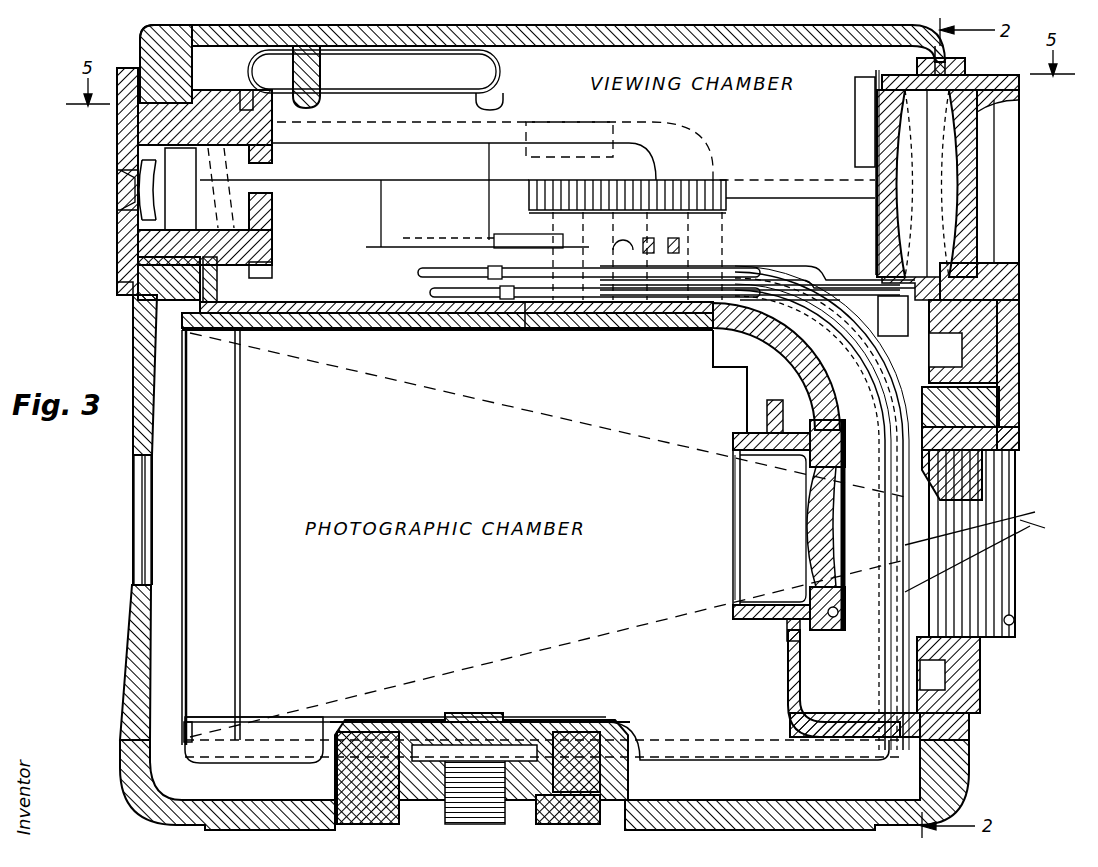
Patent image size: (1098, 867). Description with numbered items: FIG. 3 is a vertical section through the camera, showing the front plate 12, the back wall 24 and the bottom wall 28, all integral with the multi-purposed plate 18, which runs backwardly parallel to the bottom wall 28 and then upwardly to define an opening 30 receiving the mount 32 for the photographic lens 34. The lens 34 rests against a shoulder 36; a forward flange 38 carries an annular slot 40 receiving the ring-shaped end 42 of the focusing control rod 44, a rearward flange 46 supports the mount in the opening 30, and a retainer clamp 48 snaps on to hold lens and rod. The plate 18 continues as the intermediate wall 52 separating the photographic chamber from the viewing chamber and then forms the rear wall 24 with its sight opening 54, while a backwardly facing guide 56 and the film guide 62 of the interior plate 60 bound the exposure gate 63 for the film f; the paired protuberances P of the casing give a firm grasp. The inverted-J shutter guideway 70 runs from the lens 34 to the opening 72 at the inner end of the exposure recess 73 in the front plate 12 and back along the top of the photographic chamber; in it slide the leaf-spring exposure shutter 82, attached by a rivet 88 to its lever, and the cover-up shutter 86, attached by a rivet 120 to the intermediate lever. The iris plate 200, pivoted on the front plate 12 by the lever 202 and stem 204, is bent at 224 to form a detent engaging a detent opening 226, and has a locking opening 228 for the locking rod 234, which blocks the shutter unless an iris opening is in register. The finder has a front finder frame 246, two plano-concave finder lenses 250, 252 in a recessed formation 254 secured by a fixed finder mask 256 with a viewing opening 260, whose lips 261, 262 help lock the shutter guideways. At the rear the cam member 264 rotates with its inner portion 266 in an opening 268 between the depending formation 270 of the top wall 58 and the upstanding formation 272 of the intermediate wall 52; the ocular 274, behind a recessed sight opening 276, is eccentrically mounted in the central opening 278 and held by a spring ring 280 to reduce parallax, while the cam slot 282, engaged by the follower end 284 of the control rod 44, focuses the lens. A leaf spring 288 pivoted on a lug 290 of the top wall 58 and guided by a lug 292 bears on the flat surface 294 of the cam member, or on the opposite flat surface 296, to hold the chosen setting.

The front plate 12 is at (978, 688).
The multi-purposed plate 18 is at (784, 676).
The back wall 24 is at (131, 642).
The bottom wall 28 is at (820, 812).
The opening 30 is at (782, 627).
The mount 32 is at (732, 436).
The lens 34 is at (812, 511).
The shoulder 36 is at (822, 588).
The forward flange 38 is at (820, 424).
The annular slot 40 is at (845, 428).
The ring-shaped end 42 is at (832, 626).
The focusing control rod 44 is at (438, 318).
The rearward flange 46 is at (736, 612).
The retainer plate 48 is at (838, 610).
The intermediate wall 52 is at (368, 322).
The sight opening 54 is at (132, 553).
The guide 56 is at (190, 332).
The top wall 58 is at (582, 42).
The interior plate 60 is at (222, 758).
The film guide 62 is at (190, 728).
The exposure gate 63 is at (190, 596).
The shutter guideway 70 is at (836, 300).
The opening 72 is at (984, 544).
The exposure recess 73 is at (1012, 468).
The exposure shutter 82 is at (430, 293).
The cover-up shutter 86 is at (418, 272).
The rivet 88 is at (524, 324).
The rivet 120 is at (505, 282).
The iris plate 200 is at (940, 664).
The lever 202 is at (1019, 334).
The stem 204 is at (975, 408).
The bend 224 is at (926, 308).
The detent opening 226 is at (1019, 272).
The locking opening 228 is at (1005, 205).
The locking rod 234 is at (820, 254).
The front finder frame 246 is at (1019, 88).
The finder lens 250 is at (962, 192).
The finder lens 252 is at (896, 150).
The recessed formation 254 is at (958, 80).
The finder mask 256 is at (874, 97).
The viewing opening 260 is at (874, 122).
The lip 261 is at (872, 356).
The lip 262 is at (888, 334).
The cam member 264 is at (117, 126).
The inner portion 266 is at (198, 100).
The opening 268 is at (120, 262).
The depending formation 270 is at (140, 45).
The upstanding formation 272 is at (133, 288).
The ocular 274 is at (146, 184).
The sight opening 276 is at (122, 198).
The central opening 278 is at (210, 150).
The spring ring 280 is at (133, 228).
The cam slot 282 is at (248, 100).
The follower end 284 is at (217, 275).
The leaf spring 288 is at (368, 52).
The lug 290 is at (322, 102).
The lug 292 is at (505, 102).
The flat surface 294 is at (275, 120).
The flat surface 296 is at (268, 268).
The protuberances P is at (184, 527).
The film f is at (188, 528).